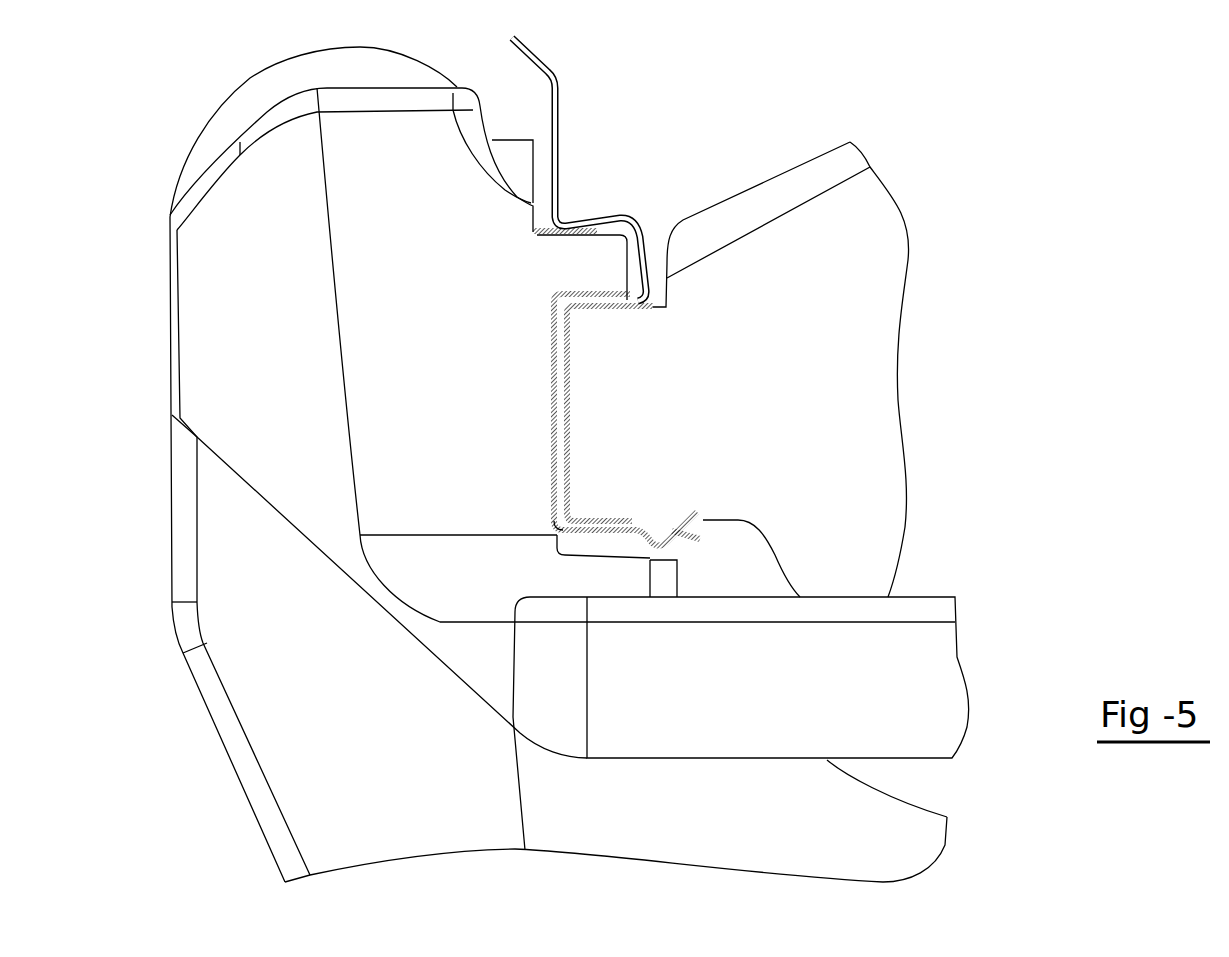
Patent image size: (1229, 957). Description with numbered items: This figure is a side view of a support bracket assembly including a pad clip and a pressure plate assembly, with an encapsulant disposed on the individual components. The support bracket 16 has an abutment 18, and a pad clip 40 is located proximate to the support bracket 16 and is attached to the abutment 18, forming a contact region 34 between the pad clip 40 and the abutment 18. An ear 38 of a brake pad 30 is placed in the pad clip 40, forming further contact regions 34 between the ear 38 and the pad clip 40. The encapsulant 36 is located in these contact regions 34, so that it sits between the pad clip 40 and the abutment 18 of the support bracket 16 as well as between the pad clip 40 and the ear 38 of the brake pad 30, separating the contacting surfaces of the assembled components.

The support bracket 16 is at (228, 782).
The abutment 18 is at (617, 262).
The brake pad 30 is at (829, 294).
The contact region 34 is at (540, 243).
The encapsulant 36 is at (567, 237).
The ear 38 is at (623, 503).
The pad clip 40 is at (557, 523).